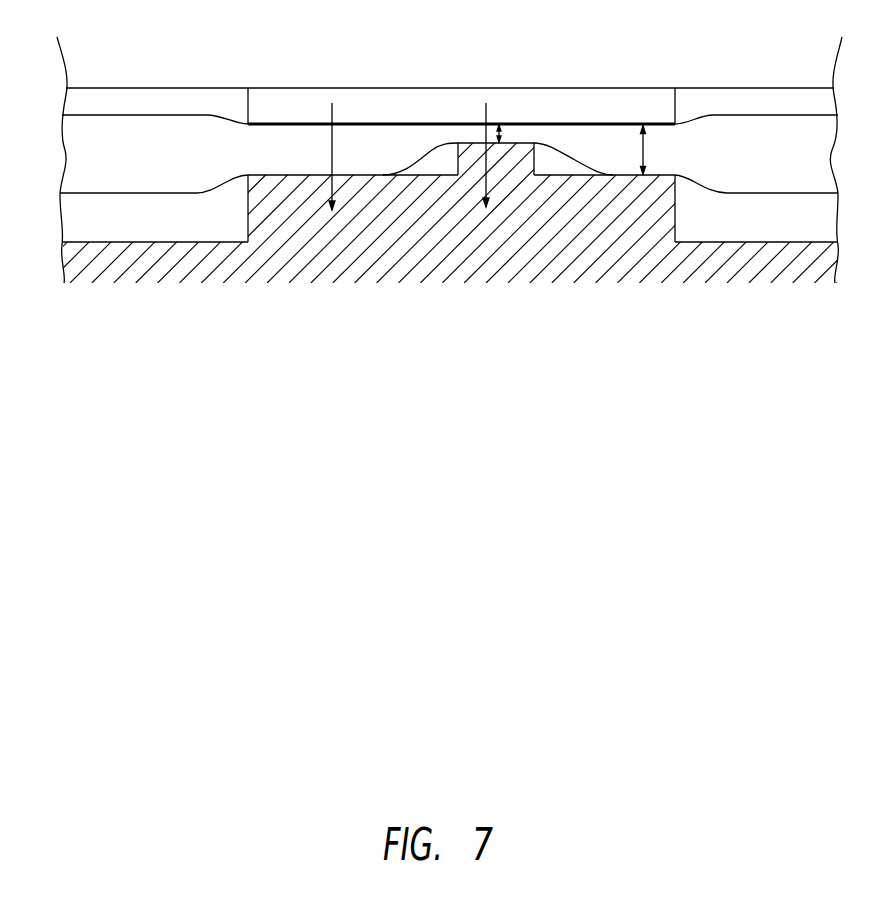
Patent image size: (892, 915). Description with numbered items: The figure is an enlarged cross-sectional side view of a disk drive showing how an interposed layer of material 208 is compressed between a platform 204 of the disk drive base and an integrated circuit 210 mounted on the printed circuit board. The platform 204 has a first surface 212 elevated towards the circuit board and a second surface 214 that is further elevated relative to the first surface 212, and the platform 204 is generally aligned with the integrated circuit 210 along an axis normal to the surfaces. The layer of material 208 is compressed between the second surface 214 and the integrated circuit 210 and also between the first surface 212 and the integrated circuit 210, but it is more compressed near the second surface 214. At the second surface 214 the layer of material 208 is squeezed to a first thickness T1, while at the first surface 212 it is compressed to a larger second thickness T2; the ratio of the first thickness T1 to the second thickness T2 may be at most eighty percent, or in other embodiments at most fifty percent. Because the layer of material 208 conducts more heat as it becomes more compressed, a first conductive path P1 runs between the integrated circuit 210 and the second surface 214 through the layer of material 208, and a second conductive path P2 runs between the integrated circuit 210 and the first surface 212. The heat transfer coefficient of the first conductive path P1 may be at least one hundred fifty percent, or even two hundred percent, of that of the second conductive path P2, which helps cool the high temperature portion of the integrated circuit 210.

The platform 204 is at (244, 228).
The layer of material 208 is at (88, 194).
The integrated circuit 210 is at (246, 112).
The first surface 212 is at (578, 170).
The second surface 214 is at (530, 137).
The first conductive path P1 is at (484, 114).
The second conductive path P2 is at (330, 113).
The first thickness T1 is at (510, 133).
The second thickness T2 is at (656, 150).